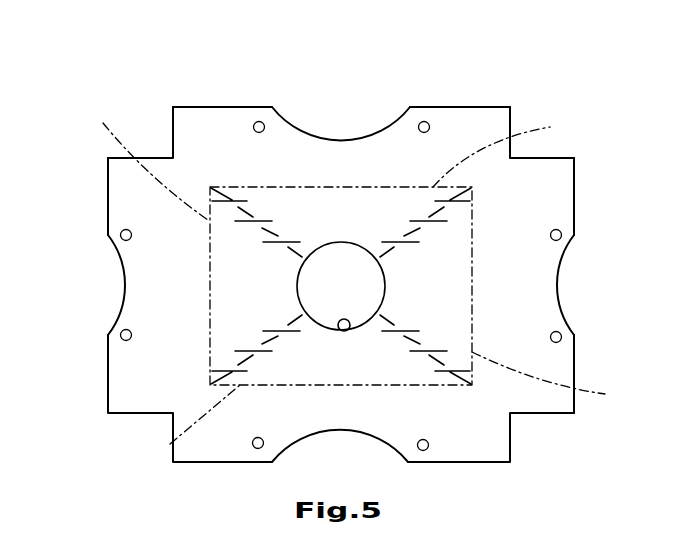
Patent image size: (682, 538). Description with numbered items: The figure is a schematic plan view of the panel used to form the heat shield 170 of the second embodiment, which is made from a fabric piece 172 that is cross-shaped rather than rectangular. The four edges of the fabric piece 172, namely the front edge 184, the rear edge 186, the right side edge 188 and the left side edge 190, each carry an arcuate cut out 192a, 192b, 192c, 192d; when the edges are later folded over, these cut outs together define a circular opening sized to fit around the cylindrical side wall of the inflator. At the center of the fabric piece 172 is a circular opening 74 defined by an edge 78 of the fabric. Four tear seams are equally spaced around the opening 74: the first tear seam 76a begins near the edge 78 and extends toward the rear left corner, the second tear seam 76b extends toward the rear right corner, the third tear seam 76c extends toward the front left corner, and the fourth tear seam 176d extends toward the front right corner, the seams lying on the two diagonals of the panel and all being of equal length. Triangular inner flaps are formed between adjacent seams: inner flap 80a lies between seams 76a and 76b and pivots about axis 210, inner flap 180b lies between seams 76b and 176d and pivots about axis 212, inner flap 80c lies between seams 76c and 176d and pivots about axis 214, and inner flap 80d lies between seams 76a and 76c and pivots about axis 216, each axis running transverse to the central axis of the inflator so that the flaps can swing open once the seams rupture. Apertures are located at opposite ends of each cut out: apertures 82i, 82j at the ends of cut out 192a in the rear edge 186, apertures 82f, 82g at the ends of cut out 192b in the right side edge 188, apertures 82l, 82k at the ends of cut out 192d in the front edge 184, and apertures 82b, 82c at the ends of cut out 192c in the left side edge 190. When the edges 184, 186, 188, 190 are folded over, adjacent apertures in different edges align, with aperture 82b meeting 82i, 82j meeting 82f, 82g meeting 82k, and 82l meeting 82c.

The heat shield 170 is at (166, 99).
The fabric piece 172 is at (487, 128).
The front edge 184 is at (500, 465).
The rear edge 186 is at (349, 107).
The right side edge 188 is at (574, 170).
The left side edge 190 is at (108, 183).
The arcuate cut out 192a is at (323, 137).
The arcuate cut out 192b is at (558, 290).
The arcuate cut out 192c is at (127, 289).
The arcuate cut out 192d is at (348, 430).
The circular opening 74 is at (345, 270).
The edge 78 is at (343, 333).
The first tear seam 76a is at (238, 198).
The second tear seam 76b is at (458, 202).
The third tear seam 76c is at (260, 350).
The fourth tear seam 176d is at (437, 352).
The inner flap 80a is at (363, 218).
The inner flap 80c is at (388, 343).
The inner flap 80d is at (283, 281).
The inner flap 180b is at (405, 287).
The aperture 82b is at (121, 236).
The aperture 82c is at (121, 337).
The aperture 82f is at (561, 231).
The aperture 82g is at (562, 339).
The aperture 82i is at (262, 121).
The aperture 82j is at (428, 122).
The aperture 82k is at (427, 450).
The aperture 82l is at (254, 448).
The axis 210 is at (550, 127).
The axis 212 is at (562, 379).
The axis 214 is at (170, 444).
The axis 216 is at (142, 160).